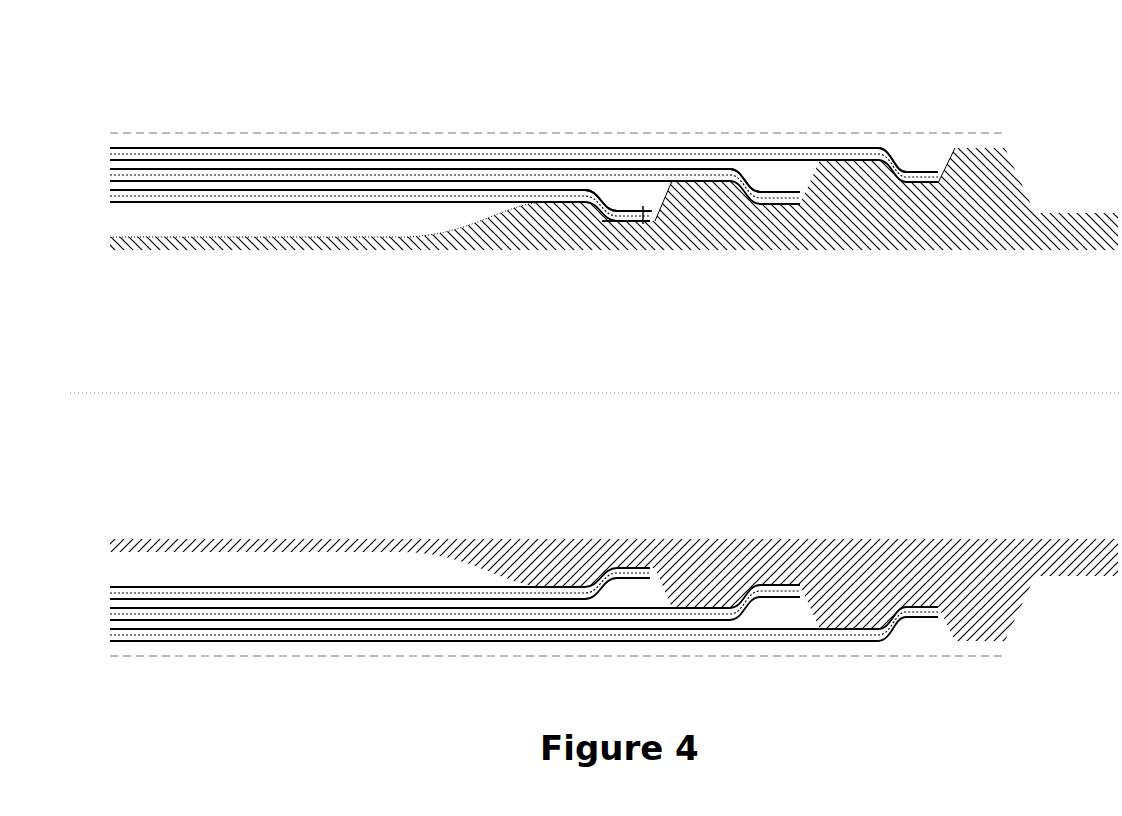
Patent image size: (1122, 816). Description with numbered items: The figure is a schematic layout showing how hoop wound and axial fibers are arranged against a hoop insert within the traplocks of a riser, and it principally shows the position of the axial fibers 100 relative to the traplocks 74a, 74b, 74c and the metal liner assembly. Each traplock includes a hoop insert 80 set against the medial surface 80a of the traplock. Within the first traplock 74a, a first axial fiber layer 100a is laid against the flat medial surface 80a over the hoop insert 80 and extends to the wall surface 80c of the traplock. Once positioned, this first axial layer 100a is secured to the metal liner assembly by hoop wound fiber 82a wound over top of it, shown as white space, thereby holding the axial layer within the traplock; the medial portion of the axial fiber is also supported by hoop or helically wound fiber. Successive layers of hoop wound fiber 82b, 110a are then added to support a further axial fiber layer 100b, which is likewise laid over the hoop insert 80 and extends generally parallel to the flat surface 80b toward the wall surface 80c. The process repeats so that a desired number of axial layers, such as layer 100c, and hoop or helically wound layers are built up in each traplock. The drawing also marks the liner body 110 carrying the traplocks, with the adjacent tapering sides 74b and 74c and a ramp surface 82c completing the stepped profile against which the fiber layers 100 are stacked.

The axial fibers 100 is at (223, 152).
The first axial fiber layer 100a is at (207, 586).
The second axial fiber layer 100b is at (240, 592).
The third axial fiber layer 100c is at (303, 597).
The substrate / housing body 110 is at (177, 222).
The hoop wound fiber layer 110a is at (207, 202).
The hoop insert 80 is at (604, 212).
The medial surface 80a is at (604, 222).
The flat surface 80b is at (618, 225).
The wall surface 80c is at (650, 205).
The hoop wound fiber 82a is at (632, 225).
The hoop wound fiber layer 82b is at (638, 225).
The step ramp surface 82c is at (943, 163).
The first traplock 74a is at (630, 197).
The second traplock 74b is at (785, 175).
The third traplock 74c is at (906, 153).